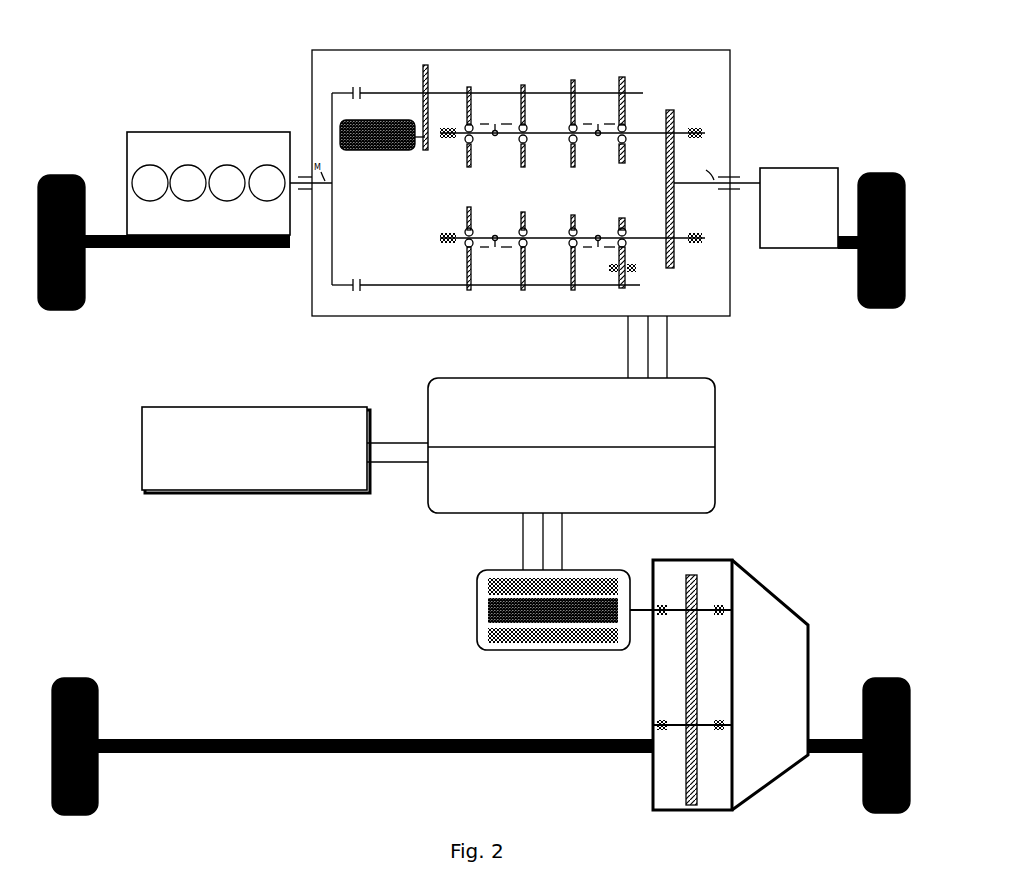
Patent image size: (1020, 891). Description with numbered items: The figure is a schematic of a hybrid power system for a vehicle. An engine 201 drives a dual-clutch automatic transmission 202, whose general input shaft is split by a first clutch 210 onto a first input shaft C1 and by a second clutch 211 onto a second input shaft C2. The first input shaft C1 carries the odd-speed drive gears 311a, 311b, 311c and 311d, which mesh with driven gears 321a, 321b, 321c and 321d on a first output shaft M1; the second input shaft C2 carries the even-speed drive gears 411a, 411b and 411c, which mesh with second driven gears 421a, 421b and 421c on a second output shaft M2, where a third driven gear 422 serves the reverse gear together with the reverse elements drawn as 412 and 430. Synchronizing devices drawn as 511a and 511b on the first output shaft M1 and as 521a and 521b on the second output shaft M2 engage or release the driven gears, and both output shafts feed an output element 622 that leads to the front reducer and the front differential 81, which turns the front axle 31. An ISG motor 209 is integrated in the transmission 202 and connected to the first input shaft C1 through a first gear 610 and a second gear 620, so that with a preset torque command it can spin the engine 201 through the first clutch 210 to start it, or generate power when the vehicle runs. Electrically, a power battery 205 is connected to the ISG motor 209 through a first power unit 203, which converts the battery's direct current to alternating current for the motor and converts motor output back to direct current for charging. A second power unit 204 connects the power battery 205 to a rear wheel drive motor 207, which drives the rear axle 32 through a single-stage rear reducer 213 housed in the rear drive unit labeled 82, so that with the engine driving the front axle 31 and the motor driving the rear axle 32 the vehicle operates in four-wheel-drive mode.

The engine 201 is at (208, 131).
The dual-clutch automatic transmission 202 is at (733, 101).
The first power unit 203 is at (571, 445).
The second power unit 204 is at (561, 480).
The power battery 205 is at (285, 450).
The rear wheel drive motor 207 is at (477, 609).
The ISG motor 209 is at (385, 149).
The first clutch 210 is at (487, 86).
The second clutch 211 is at (486, 278).
The rear reducer 213 is at (653, 689).
The front axle 31 is at (197, 248).
The rear axle 32 is at (210, 738).
The front differential 81 is at (795, 168).
The rear drive housing 82 is at (810, 630).
The drive gear for the first gear 311a is at (481, 101).
The drive gear for the third gear 311b is at (533, 101).
The drive gear for the fifth gear 311c is at (573, 100).
The drive gear for the seventh gear 311d is at (620, 99).
The driven gear for the first gear 321a is at (476, 156).
The driven gear for the third gear 321b is at (525, 156).
The driven gear for the fifth gear 321c is at (573, 155).
The driven gear for the seventh gear 321d is at (622, 154).
The second driven gear for the second gear 421a is at (468, 216).
The second driven gear for the fourth gear 421b is at (522, 215).
The second driven gear for the sixth gear 421c is at (570, 216).
The third driven gear 422 is at (620, 215).
The second drive gear for the second gear 411a is at (470, 272).
The second drive gear for the fourth gear 411b is at (522, 272).
The second drive gear for the sixth gear 411c is at (572, 275).
The reverse driven gear 412 is at (620, 271).
The reverse idler 430 is at (626, 268).
The first synchronizer 511a is at (496, 138).
The second synchronizer 511b is at (598, 138).
The third synchronizer 521a is at (496, 236).
The fourth synchronizer 521b is at (599, 236).
The first gear 610 is at (423, 157).
The second gear 620 is at (428, 73).
The output shaft 622 is at (670, 189).
The first input shaft C1 is at (382, 93).
The second input shaft C2 is at (382, 285).
The first output shaft M1 is at (462, 138).
The second output shaft M2 is at (467, 237).